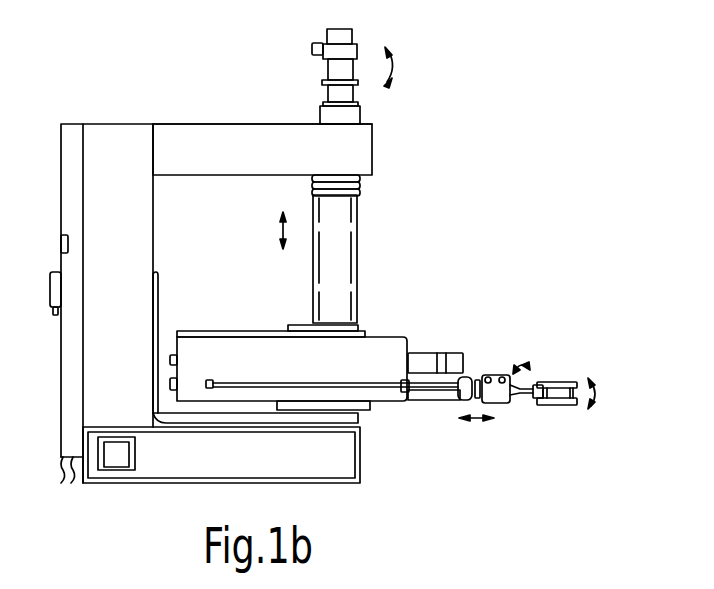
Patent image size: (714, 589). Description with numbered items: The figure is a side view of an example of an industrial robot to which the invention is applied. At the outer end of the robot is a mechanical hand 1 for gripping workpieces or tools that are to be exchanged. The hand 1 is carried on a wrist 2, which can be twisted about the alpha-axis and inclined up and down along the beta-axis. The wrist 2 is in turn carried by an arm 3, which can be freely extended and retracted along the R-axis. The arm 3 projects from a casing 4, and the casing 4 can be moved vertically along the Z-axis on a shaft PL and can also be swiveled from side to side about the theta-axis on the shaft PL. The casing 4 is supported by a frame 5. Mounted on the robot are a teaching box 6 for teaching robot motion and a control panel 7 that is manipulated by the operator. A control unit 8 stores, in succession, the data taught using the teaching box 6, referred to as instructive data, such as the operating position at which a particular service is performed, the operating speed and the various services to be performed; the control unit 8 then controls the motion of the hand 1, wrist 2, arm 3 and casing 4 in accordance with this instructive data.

The mechanical hand 1 is at (578, 382).
The wrist 2 is at (533, 382).
The arm 3 is at (490, 374).
The casing 4 is at (393, 343).
The frame 5 is at (372, 153).
The teaching box 6 is at (50, 296).
The control panel 7 is at (61, 240).
The control unit 8 is at (62, 388).
The shaft PL is at (353, 229).